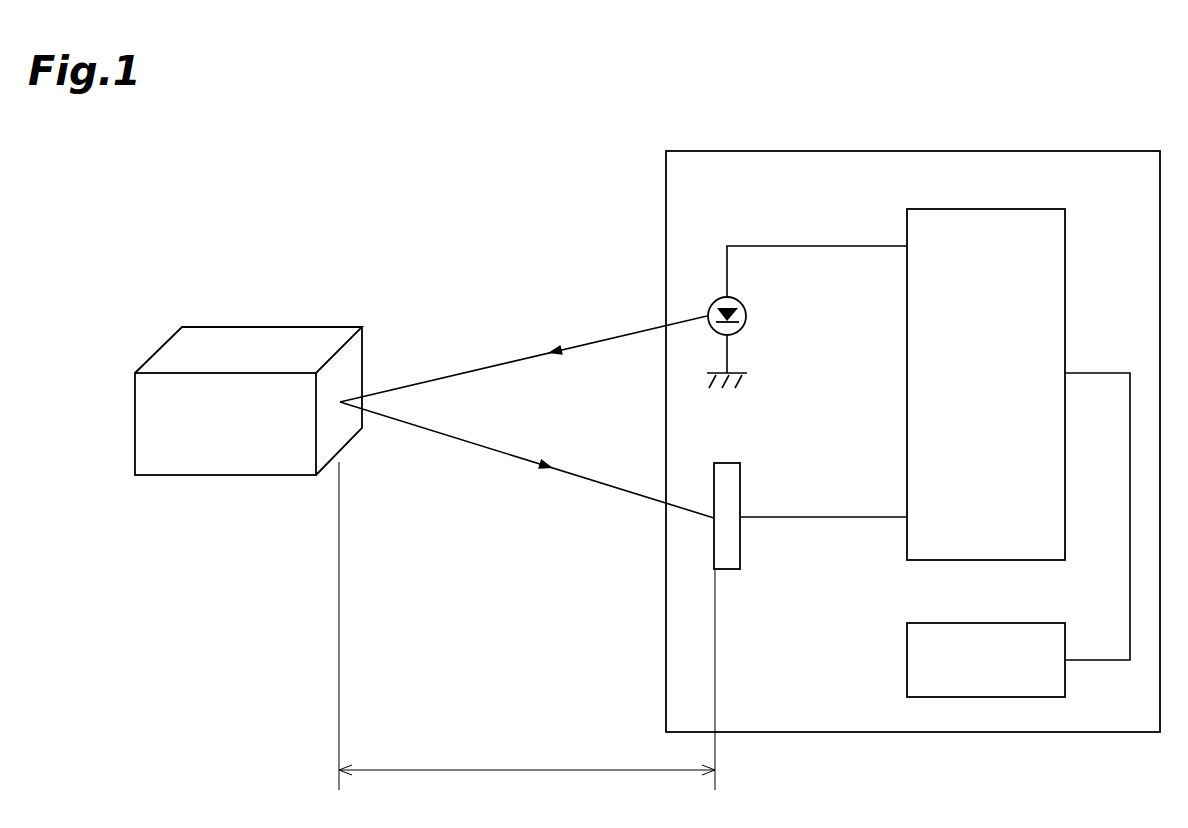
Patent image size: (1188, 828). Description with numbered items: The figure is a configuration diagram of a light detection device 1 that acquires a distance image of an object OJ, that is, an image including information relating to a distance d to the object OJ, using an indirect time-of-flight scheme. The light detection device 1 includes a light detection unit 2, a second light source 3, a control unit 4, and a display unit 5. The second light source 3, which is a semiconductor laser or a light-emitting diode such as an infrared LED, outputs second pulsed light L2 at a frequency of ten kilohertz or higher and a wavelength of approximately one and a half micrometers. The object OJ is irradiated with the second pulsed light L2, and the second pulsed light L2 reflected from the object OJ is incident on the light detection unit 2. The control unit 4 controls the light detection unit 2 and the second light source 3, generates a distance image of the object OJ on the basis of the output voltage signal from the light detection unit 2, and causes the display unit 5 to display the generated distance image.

The light detection device 1 is at (877, 151).
The light detection unit 2 is at (727, 571).
The second light source 3 is at (747, 316).
The control unit 4 is at (1010, 209).
The display unit 5 is at (1010, 623).
The object OJ is at (278, 332).
The second pulsed light L2 is at (608, 338).
The distance d is at (527, 626).